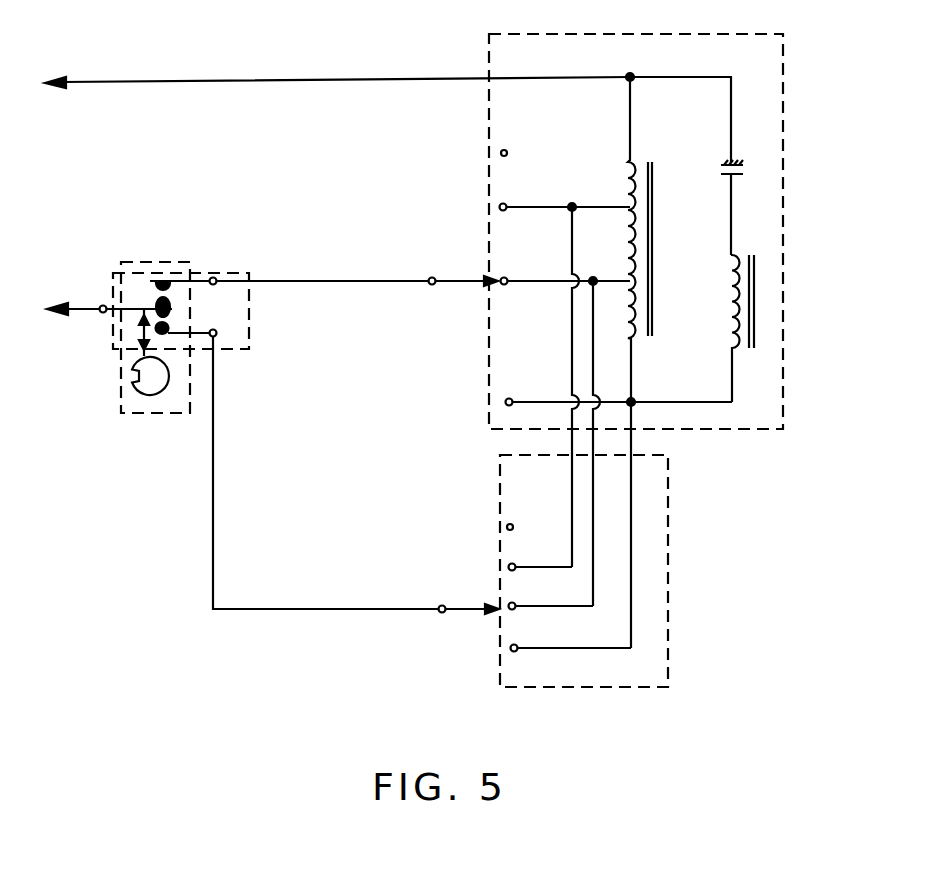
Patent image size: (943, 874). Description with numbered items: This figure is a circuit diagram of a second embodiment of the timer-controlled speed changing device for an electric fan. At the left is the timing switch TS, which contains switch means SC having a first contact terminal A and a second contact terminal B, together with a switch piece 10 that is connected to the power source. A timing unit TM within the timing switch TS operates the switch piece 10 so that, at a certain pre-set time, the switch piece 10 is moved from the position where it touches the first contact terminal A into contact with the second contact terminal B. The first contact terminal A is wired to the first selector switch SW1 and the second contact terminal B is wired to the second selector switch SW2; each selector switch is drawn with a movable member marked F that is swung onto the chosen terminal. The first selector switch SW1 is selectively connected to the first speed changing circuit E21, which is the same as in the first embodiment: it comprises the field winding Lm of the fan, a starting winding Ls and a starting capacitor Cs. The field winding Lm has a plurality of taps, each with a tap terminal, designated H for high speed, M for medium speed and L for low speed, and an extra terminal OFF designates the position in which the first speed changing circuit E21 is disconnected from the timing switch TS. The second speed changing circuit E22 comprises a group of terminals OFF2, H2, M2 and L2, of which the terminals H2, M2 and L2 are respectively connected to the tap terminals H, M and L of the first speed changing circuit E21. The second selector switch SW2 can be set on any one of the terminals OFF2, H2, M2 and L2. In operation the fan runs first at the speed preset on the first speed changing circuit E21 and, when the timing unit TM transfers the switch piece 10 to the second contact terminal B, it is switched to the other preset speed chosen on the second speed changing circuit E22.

The switch piece 10 is at (128, 307).
The timing switch TS is at (155, 317).
The timing unit TM is at (153, 395).
The switch means SC is at (249, 305).
The first contact terminal A is at (191, 266).
The second contact terminal B is at (202, 336).
The first selector switch SW1 is at (357, 264).
The second selector switch SW2 is at (356, 475).
The movable switch contact F is at (435, 469).
The extra terminal OFF is at (527, 155).
The tap terminal for high speed H is at (565, 385).
The tap terminal for medium speed M is at (566, 441).
The tap terminal for low speed L is at (619, 513).
The field winding Lm is at (662, 239).
The starting winding Ls is at (757, 328).
The starting capacitor Cs is at (748, 207).
The first speed changing circuit E21 is at (783, 392).
The second speed changing circuit E22 is at (670, 593).
The terminal OFF2 is at (539, 533).
The terminal H2 is at (541, 581).
The terminal M2 is at (551, 623).
The terminal L2 is at (571, 662).